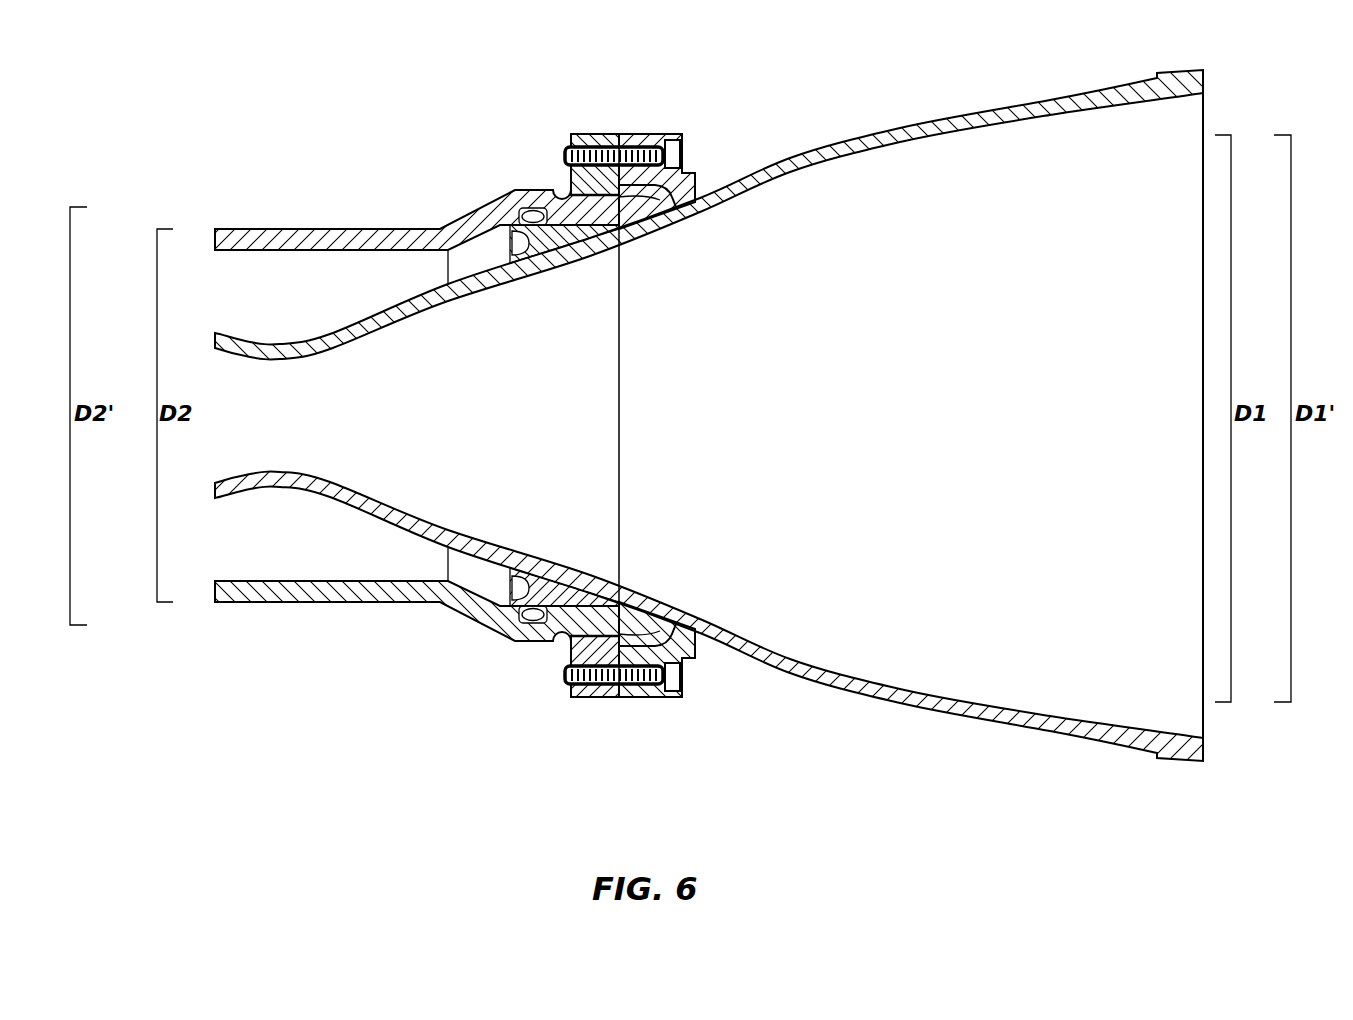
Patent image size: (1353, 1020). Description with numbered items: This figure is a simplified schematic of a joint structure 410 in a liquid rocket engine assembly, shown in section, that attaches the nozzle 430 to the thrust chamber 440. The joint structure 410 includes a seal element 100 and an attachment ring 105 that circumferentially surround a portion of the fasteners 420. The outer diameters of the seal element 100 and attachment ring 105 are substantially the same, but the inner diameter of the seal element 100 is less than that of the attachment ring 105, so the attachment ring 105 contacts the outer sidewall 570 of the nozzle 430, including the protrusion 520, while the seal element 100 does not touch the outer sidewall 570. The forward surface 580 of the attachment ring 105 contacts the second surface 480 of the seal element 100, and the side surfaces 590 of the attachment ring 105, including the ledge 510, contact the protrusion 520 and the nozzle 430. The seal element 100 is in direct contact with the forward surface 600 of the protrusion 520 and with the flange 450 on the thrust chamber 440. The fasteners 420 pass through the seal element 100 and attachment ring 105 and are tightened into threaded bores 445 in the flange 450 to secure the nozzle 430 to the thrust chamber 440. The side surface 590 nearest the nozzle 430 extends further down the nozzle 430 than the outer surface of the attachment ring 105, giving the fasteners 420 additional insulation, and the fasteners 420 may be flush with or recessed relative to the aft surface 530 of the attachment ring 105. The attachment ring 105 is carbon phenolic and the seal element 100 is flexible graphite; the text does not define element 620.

The seal element 100 is at (619, 700).
The attachment ring 105 is at (672, 702).
The joint structure 410 is at (643, 106).
The fasteners 420 is at (696, 655).
The nozzle 430 is at (1005, 724).
The thrust chamber 440 is at (405, 603).
The threaded bore 445 is at (590, 700).
The flange 450 is at (575, 700).
The second surface 480 is at (620, 218).
The ledge 510 is at (694, 166).
The protrusion 520 is at (700, 188).
The aft surface 530 is at (682, 132).
The outer sidewall 570 is at (958, 112).
The forward surface 580 is at (568, 140).
The side surfaces 590 is at (612, 133).
The forward surface 600 is at (574, 192).
The nut 620 is at (683, 680).